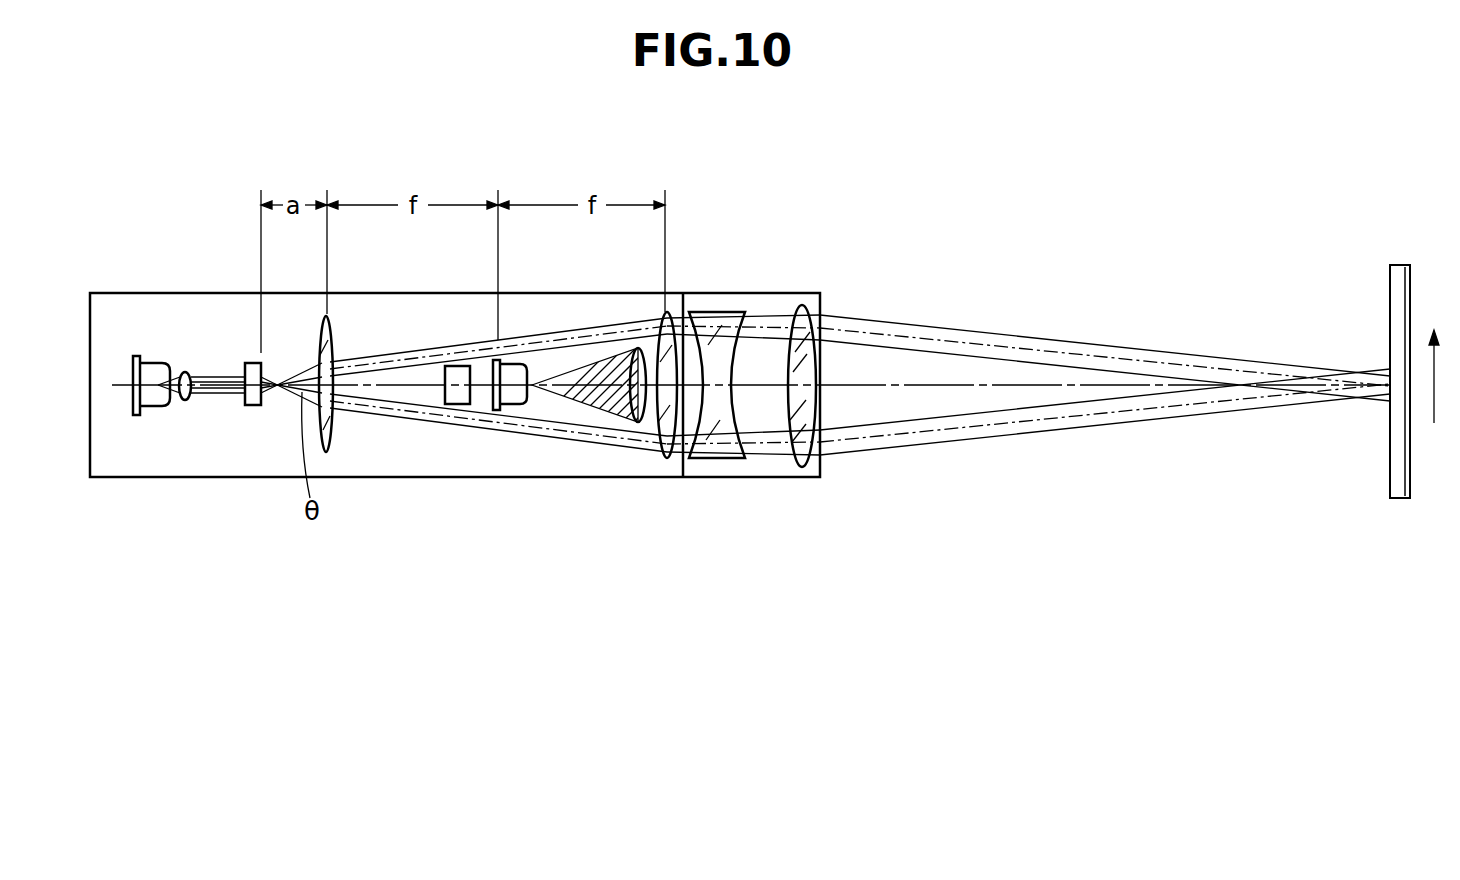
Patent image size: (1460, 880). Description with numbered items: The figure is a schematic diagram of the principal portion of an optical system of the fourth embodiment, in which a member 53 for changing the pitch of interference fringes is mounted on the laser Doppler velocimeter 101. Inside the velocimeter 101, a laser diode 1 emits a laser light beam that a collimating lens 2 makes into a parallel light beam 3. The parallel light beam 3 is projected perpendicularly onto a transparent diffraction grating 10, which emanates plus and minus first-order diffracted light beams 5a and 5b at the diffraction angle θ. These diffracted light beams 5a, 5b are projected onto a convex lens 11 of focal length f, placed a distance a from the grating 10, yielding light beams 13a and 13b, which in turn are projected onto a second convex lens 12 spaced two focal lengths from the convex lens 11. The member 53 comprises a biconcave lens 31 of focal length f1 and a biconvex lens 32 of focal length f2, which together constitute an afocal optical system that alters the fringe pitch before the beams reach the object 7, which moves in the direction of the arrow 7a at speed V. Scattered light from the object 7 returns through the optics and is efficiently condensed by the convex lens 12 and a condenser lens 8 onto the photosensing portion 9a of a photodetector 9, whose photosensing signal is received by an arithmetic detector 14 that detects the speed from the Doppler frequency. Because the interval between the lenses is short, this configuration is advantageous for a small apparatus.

The laser Doppler velocimeter 101 is at (142, 293).
The laser diode 1 is at (150, 405).
The collimating lens 2 is at (186, 372).
The parallel light beam 3 is at (207, 392).
The diffraction grating 10 is at (252, 406).
The diffracted light beam 5a is at (293, 373).
The diffracted light beam 5b is at (275, 393).
The convex lens 11 is at (334, 440).
The light beam 13a is at (375, 362).
The light beam 13b is at (373, 404).
The arithmetic detector 14 is at (457, 405).
The photodetector 9 is at (505, 402).
The photosensing portion 9a is at (522, 362).
The condenser lens 8 is at (627, 423).
The convex lens 12 is at (662, 458).
The biconcave lens 31 is at (712, 458).
The member for changing the pitch of interference fringes 53 is at (758, 468).
The biconvex lens 32 is at (794, 463).
The object 7 is at (1389, 468).
The arrow 7a is at (1434, 424).